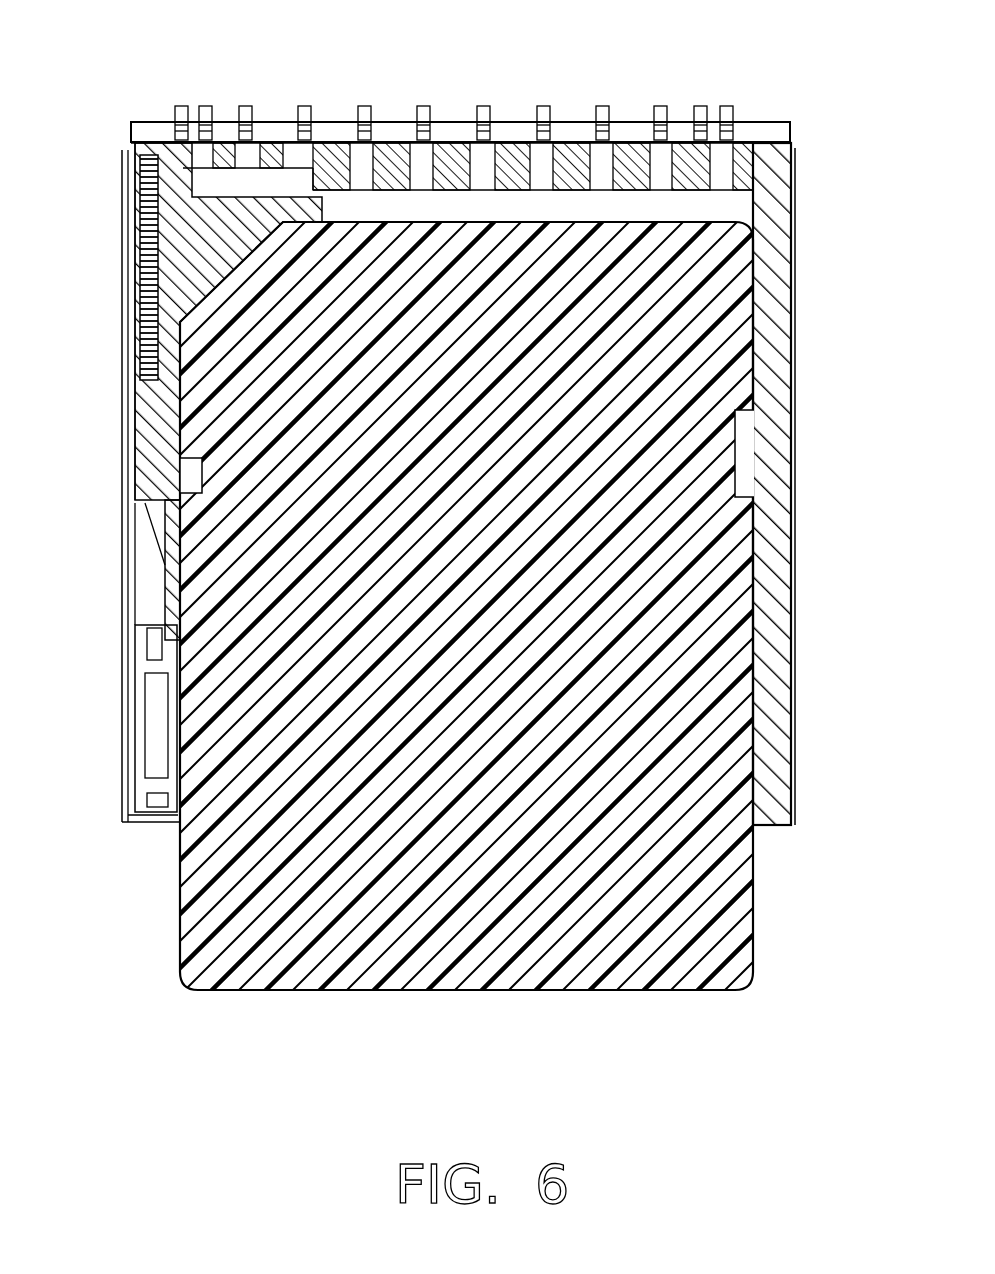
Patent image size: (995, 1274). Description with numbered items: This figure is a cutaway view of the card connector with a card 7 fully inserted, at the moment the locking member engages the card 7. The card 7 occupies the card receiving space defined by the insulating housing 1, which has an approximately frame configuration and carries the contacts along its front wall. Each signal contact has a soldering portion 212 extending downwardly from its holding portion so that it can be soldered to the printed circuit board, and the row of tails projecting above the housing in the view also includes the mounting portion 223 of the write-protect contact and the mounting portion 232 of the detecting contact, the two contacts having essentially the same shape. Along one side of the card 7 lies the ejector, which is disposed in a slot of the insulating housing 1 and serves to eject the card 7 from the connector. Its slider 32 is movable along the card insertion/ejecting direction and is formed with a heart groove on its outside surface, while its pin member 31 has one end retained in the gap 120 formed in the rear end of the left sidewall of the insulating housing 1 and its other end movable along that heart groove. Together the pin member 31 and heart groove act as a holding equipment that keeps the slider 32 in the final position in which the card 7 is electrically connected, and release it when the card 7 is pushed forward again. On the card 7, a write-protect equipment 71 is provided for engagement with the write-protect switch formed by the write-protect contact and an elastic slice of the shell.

The insulating housing 1 is at (778, 268).
The card 7 is at (250, 893).
The write-protect equipment 71 is at (790, 496).
The pin member 31 is at (137, 697).
The slider 32 is at (152, 455).
The gap 120 is at (162, 800).
The soldering portion 212 is at (424, 108).
The mounting portion 223 is at (726, 112).
The mounting portion 232 is at (181, 108).